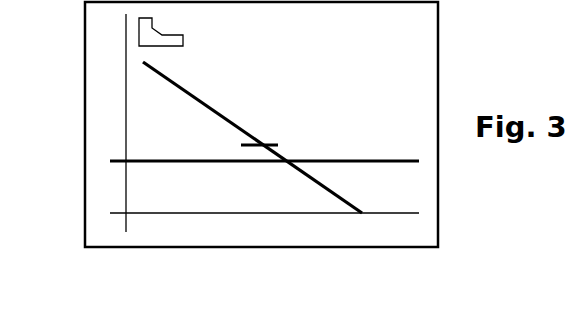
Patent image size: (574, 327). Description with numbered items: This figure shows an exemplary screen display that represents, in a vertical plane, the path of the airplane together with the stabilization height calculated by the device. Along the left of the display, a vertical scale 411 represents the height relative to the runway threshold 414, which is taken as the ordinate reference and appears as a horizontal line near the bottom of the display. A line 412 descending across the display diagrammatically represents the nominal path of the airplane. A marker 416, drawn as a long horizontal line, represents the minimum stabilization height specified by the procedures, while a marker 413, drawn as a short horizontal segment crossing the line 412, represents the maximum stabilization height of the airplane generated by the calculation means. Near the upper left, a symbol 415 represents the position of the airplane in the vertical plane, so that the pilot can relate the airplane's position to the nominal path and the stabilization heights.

The vertical scale 411 is at (125, 118).
The line 412 is at (176, 83).
The marker 413 is at (268, 142).
The runway threshold 414 is at (245, 214).
The symbol 415 is at (173, 41).
The marker 416 is at (372, 158).